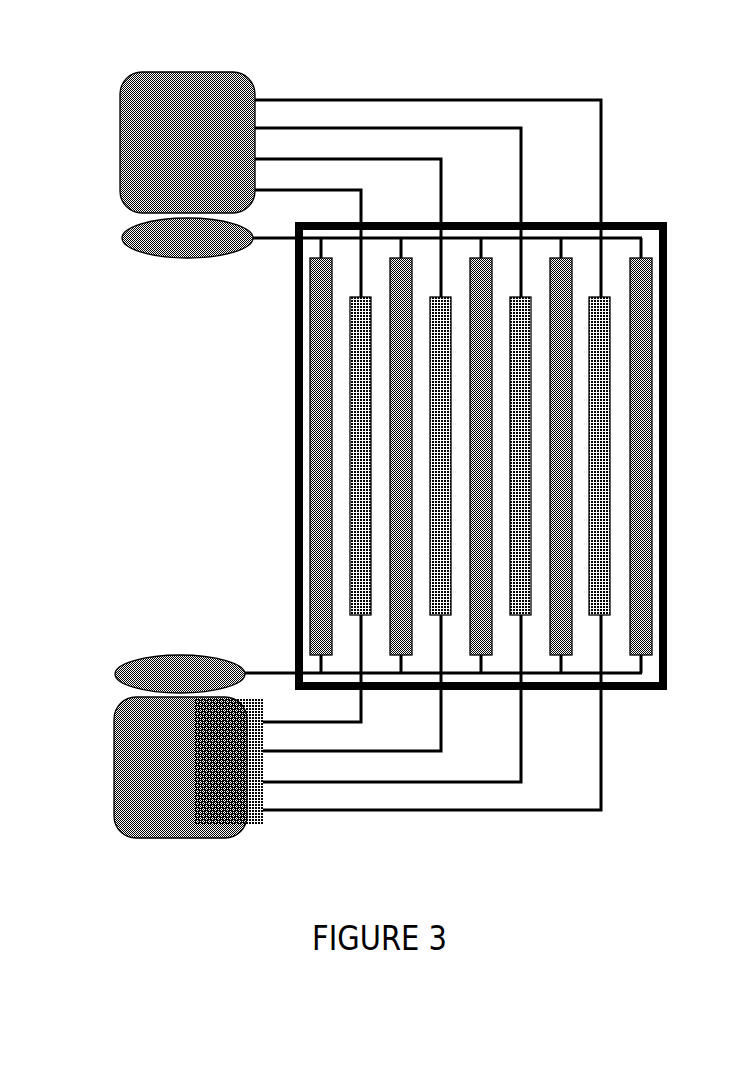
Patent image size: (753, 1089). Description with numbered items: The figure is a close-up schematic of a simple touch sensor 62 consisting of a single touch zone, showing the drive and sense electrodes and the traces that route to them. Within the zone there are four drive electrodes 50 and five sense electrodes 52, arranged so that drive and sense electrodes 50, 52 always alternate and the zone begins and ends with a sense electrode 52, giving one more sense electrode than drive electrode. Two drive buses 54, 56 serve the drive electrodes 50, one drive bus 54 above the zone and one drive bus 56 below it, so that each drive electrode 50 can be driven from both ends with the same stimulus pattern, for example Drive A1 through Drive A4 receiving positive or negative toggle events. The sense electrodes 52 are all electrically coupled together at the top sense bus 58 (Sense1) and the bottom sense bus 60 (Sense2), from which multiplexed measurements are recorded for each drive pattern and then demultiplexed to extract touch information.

The drive electrodes 50 is at (593, 532).
The sense electrodes 52 is at (633, 412).
The drive bus 54 is at (243, 73).
The drive bus 56 is at (115, 745).
The sense bus 58 is at (122, 232).
The sense bus 60 is at (173, 650).
The touch sensor 62 is at (638, 215).